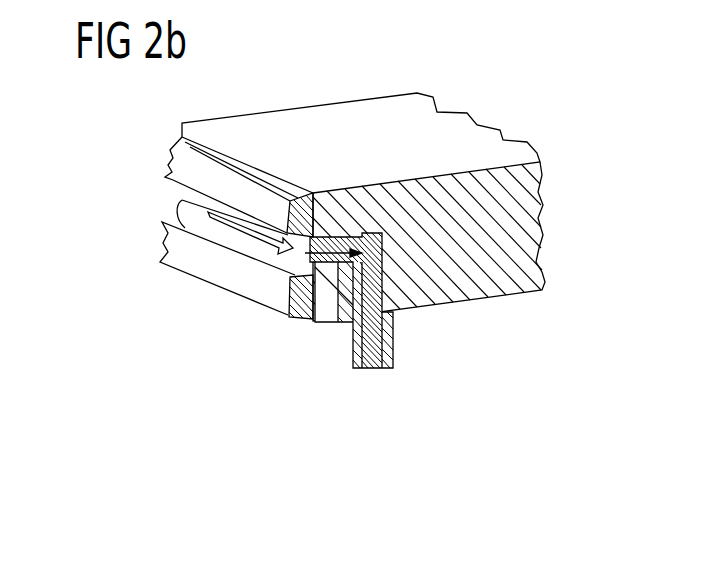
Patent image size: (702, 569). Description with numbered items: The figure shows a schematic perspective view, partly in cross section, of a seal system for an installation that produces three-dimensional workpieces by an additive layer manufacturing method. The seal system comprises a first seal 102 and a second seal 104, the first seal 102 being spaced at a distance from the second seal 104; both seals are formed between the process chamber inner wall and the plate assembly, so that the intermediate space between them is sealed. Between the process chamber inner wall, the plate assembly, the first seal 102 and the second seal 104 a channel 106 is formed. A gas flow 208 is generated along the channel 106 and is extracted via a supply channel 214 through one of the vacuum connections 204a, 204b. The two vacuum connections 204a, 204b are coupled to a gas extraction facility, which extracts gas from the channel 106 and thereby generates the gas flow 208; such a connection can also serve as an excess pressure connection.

The first seal 102 is at (166, 176).
The second seal 104 is at (268, 308).
The channel 106 is at (152, 213).
The gas flow 208 is at (352, 273).
The supply channel 214 is at (397, 343).
The vacuum connection 204a is at (357, 315).
The vacuum connection 204b is at (387, 340).